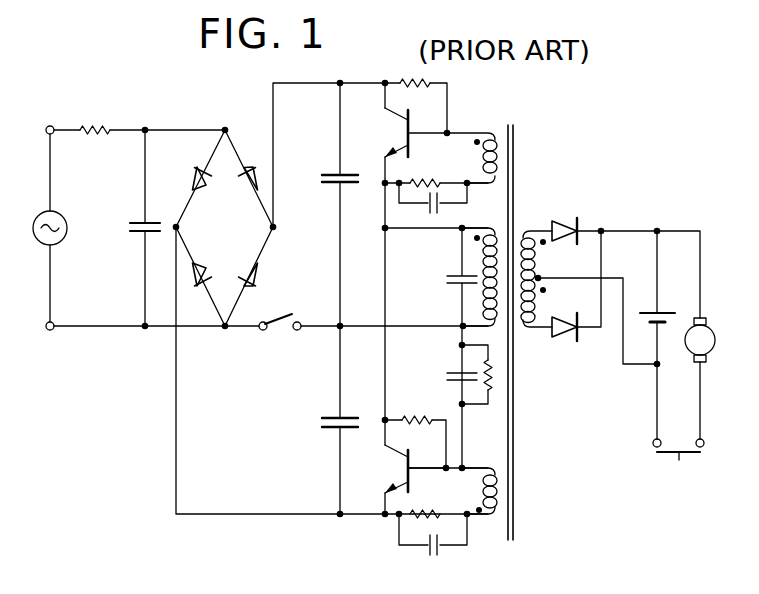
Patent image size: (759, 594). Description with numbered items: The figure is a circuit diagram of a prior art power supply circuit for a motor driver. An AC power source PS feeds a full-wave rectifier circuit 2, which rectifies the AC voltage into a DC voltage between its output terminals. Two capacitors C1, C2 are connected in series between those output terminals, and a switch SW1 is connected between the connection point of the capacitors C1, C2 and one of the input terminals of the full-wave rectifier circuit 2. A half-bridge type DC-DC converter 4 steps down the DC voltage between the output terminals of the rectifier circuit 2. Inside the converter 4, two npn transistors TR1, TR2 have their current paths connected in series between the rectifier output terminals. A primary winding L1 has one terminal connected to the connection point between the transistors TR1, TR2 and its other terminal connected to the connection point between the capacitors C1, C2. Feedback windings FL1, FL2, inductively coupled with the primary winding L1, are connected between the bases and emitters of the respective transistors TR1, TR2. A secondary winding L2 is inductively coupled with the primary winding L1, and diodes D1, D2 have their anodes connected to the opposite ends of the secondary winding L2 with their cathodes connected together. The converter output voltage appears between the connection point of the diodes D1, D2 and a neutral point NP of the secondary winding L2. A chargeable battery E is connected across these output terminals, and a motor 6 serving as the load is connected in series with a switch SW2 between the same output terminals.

The full-wave rectifier circuit 2 is at (206, 146).
The half-bridge type DC-DC converter 4 is at (513, 122).
The motor 6 is at (717, 345).
The AC power source PS is at (66, 238).
The switch SW1 is at (272, 330).
The switch SW2 is at (678, 463).
The capacitor C1 is at (333, 164).
The capacitor C2 is at (324, 423).
The npn transistor TR1 is at (404, 136).
The npn transistor TR2 is at (404, 472).
The feedback winding FL1 is at (494, 130).
The feedback winding FL2 is at (485, 524).
The primary winding L1 is at (471, 302).
The secondary winding L2 is at (534, 322).
The neutral point NP is at (540, 276).
The diode D1 is at (565, 217).
The diode D2 is at (568, 340).
The chargeable battery E is at (678, 297).